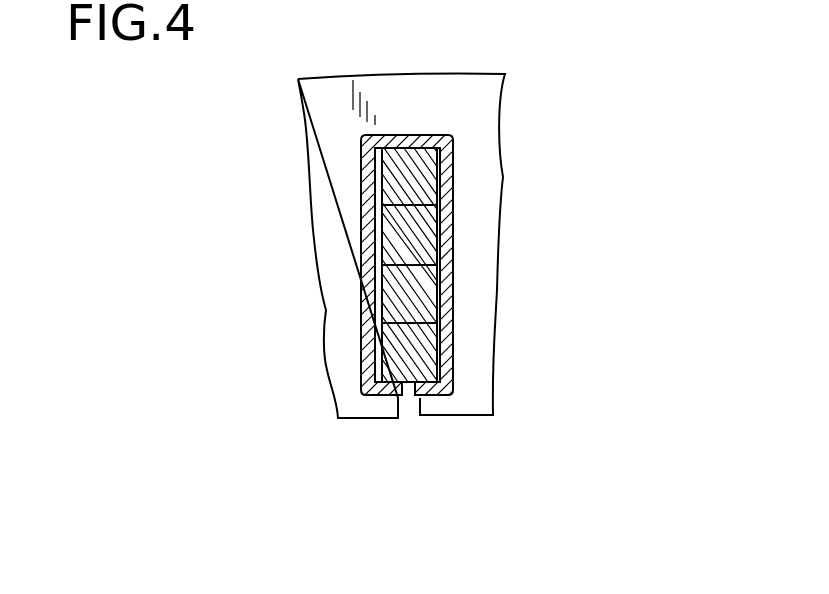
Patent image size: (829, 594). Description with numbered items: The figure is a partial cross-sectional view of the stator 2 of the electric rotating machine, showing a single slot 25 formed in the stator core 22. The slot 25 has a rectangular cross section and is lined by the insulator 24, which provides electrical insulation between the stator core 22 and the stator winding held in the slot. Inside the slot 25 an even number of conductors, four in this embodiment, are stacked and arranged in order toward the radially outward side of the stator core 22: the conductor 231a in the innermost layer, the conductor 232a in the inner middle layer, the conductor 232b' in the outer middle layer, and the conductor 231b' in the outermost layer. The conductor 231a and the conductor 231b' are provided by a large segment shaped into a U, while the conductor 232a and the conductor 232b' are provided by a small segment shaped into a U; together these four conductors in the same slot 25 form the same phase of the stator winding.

The stator 2 is at (526, 78).
The stator core 22 is at (450, 80).
The insulator 24 is at (452, 135).
The slot 25 is at (410, 407).
The conductor in the outermost layer 231b' is at (484, 176).
The conductor in the outer middle layer 232b' is at (484, 235).
The conductor in the inner middle layer 232a is at (418, 293).
The conductor in the innermost layer 231a is at (418, 351).